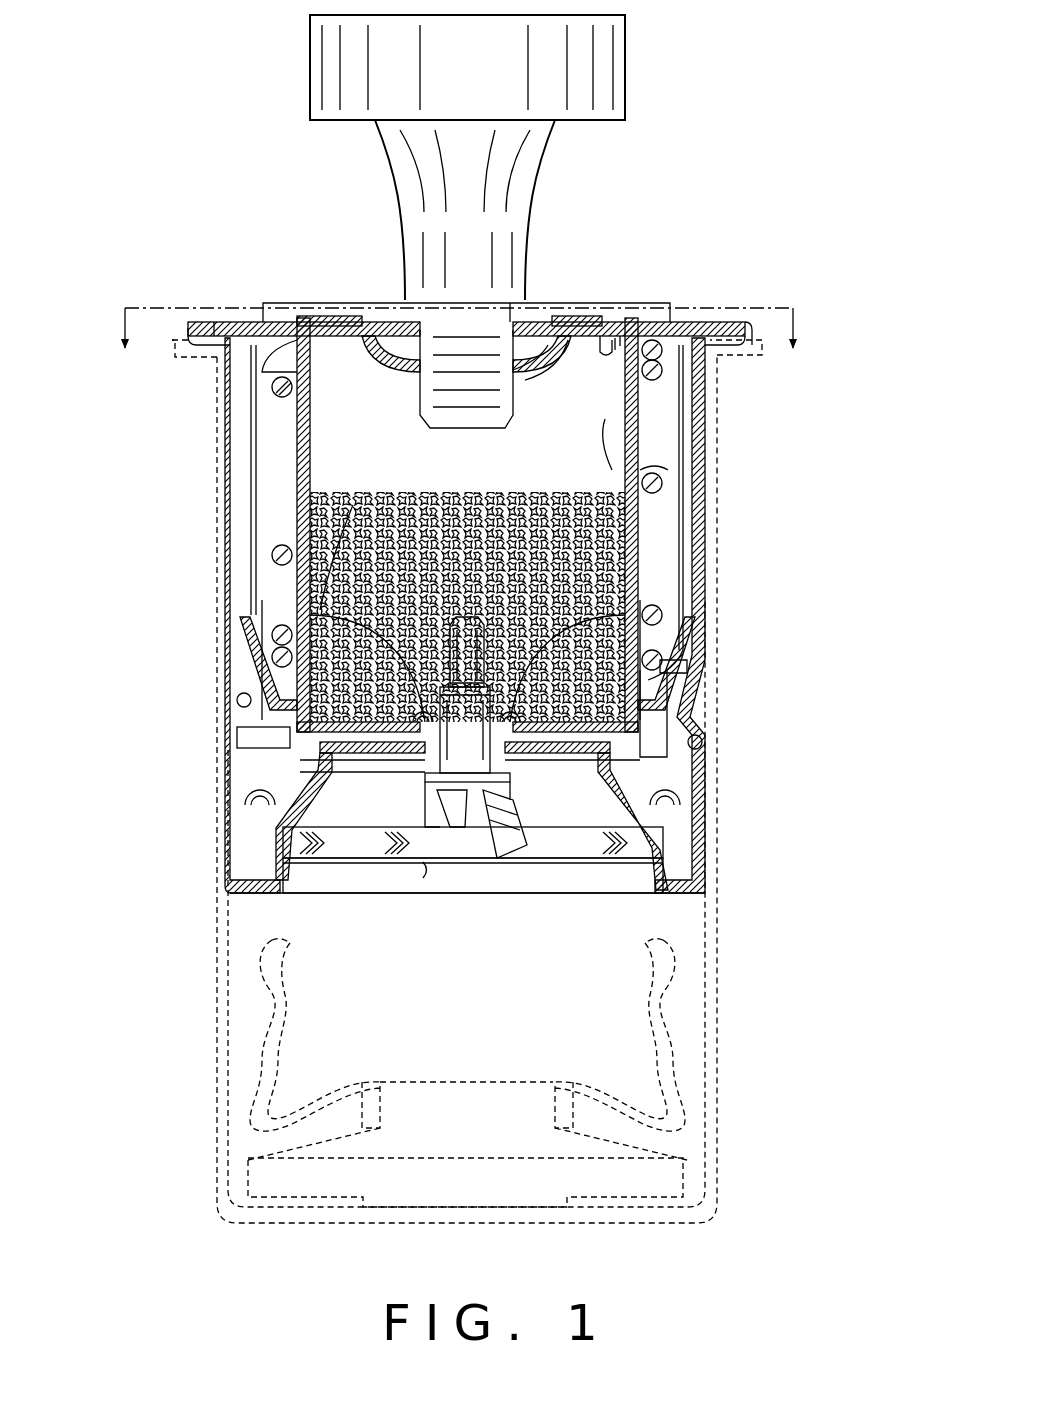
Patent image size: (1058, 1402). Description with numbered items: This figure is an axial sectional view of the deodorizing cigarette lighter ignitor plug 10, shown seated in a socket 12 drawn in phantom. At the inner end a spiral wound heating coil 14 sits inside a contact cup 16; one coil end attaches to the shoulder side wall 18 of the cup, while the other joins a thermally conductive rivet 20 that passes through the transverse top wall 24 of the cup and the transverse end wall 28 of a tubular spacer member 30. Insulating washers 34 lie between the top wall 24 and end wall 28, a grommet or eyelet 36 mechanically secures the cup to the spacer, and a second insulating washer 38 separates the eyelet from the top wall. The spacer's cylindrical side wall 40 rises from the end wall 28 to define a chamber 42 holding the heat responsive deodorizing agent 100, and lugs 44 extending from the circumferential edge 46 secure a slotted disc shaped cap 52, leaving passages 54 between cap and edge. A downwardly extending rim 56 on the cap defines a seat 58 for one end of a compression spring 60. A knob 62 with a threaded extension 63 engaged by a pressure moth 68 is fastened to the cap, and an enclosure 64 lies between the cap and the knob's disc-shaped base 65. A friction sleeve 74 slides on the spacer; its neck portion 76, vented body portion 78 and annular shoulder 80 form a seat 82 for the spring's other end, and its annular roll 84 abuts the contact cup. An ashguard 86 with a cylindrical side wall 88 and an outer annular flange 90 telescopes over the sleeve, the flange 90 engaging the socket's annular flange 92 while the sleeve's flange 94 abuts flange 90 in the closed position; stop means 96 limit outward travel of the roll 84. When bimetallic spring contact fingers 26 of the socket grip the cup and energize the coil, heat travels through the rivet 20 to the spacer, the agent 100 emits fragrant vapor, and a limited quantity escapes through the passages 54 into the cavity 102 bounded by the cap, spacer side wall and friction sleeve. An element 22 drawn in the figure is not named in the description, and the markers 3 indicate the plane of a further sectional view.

The cigarette lighter ignitor plug 10 is at (704, 224).
The socket 12 is at (724, 1085).
The spiral wound heating coil element 14 is at (423, 862).
The contact cup 16 is at (305, 872).
The shoulder side wall 18 is at (297, 900).
The thermally conductive rod or rivet 20 is at (640, 575).
The tab 22 is at (236, 728).
The transverse top wall 24 is at (645, 786).
The bimetallic spring contact fingers 26 is at (258, 1052).
The transverse end wall 28 is at (640, 638).
The tubular body or spacer member 30 is at (640, 542).
The electrically insulating washers 34 is at (300, 752).
The grommet or eyelet 36 is at (240, 624).
The second insulating washer 38 is at (258, 795).
The cylindrical side wall 40 is at (605, 419).
The cavity or chamber 42 is at (530, 466).
The lugs 44 is at (331, 306).
The circumferential edge 46 is at (605, 322).
The slotted disc shaped cap member 52 is at (685, 323).
The passages 54 is at (650, 325).
The downwardly extending rim 56 is at (278, 372).
The seat 58 is at (268, 394).
The compression spring 60 is at (662, 480).
The knob 62 is at (625, 68).
The threaded extension 63 is at (447, 428).
The enclosure 64 is at (520, 318).
The disc-shaped base 65 is at (393, 298).
The pressure moth 68 is at (547, 352).
The inner sheath or friction sleeve 74 is at (257, 565).
The neck portion 76 is at (300, 772).
The vented body portion 78 is at (668, 478).
The annular shoulder 80 is at (698, 712).
The seat 82 is at (688, 667).
The annular roll 84 is at (285, 798).
The outer sheath or ashguard 86 is at (226, 502).
The cylindrical side wall 88 is at (257, 533).
The annular flange 90 is at (188, 324).
The annular flange 92 is at (172, 340).
The annular flange 94 is at (218, 322).
The stop means 96 is at (237, 697).
The heat responsive deodorizing agent 100 is at (353, 505).
The cavity 102 is at (270, 585).
The section line 3- 3 is at (459, 345).